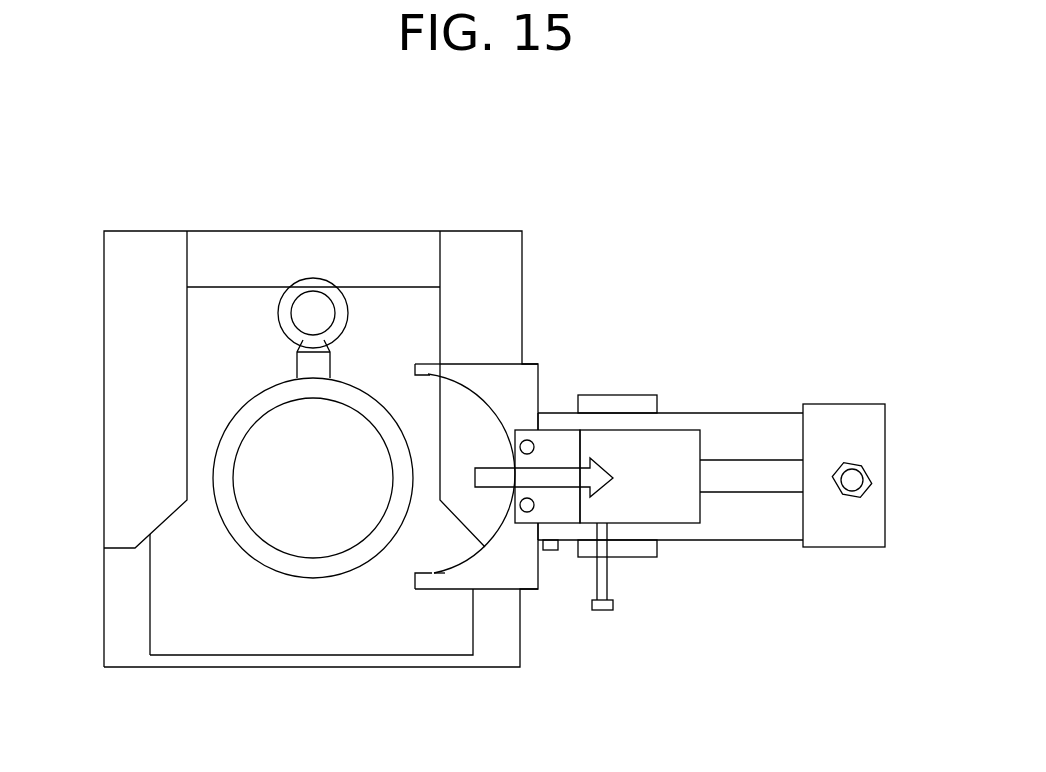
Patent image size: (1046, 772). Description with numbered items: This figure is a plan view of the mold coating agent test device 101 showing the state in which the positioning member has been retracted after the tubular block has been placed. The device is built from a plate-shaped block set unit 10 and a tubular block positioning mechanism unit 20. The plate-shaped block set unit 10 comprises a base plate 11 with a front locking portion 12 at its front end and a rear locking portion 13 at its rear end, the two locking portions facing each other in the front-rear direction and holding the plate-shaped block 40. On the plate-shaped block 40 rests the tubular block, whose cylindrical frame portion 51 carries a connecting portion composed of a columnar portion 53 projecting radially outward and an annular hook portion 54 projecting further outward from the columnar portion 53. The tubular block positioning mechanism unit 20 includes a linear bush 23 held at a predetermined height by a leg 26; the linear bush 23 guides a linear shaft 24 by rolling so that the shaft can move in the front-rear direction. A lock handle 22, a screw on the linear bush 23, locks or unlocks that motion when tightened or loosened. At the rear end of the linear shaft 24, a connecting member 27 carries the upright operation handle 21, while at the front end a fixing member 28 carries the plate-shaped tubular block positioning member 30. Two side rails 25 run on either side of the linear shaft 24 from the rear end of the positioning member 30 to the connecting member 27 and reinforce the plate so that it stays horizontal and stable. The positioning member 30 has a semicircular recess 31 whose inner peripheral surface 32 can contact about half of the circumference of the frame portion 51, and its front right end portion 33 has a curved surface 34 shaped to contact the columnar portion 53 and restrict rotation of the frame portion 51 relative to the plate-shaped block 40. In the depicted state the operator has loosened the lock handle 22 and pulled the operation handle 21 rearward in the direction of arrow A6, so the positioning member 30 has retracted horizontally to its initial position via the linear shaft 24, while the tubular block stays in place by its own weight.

The mold coating agent test device 101 is at (805, 192).
The plate-shaped block set unit 10 is at (137, 222).
The base plate 11 is at (130, 595).
The front locking portion 12 is at (150, 312).
The rear locking portion 13 is at (507, 252).
The plate-shaped block 40 is at (232, 265).
The frame portion 51 is at (260, 545).
The columnar portion 53 is at (295, 362).
The annular hook portion 54 is at (313, 278).
The tubular block positioning member 30 is at (505, 577).
The recess 31 is at (433, 565).
The inner peripheral surface 32 is at (460, 562).
The front right end portion 33 is at (444, 366).
The curved surface 34 is at (424, 362).
The arrow A6 is at (540, 478).
The tubular block positioning mechanism unit 20 is at (870, 398).
The operation handle 21 is at (850, 480).
The lock handle 22 is at (603, 612).
The linear bush 23 is at (683, 443).
The linear shaft 24 is at (768, 480).
The side rails 25 is at (760, 422).
The leg 26 is at (618, 407).
The connecting member 27 is at (857, 525).
The fixing member 28 is at (570, 457).